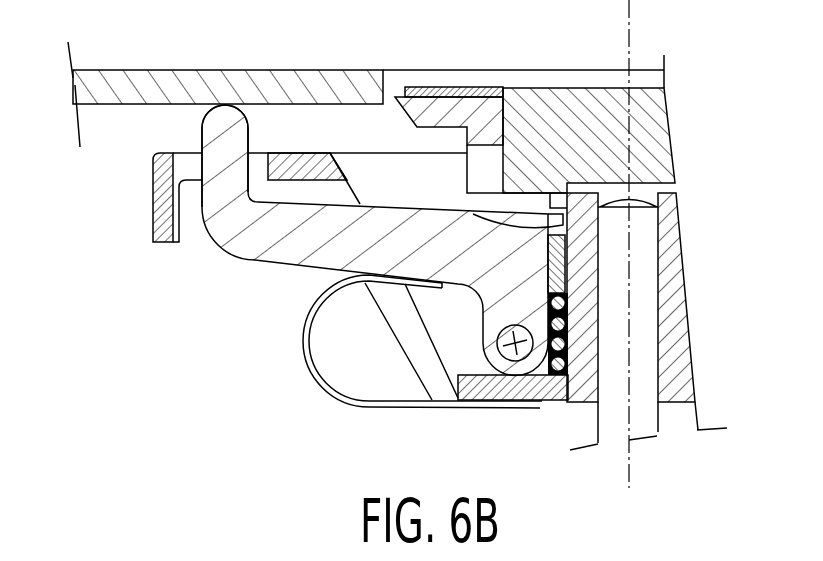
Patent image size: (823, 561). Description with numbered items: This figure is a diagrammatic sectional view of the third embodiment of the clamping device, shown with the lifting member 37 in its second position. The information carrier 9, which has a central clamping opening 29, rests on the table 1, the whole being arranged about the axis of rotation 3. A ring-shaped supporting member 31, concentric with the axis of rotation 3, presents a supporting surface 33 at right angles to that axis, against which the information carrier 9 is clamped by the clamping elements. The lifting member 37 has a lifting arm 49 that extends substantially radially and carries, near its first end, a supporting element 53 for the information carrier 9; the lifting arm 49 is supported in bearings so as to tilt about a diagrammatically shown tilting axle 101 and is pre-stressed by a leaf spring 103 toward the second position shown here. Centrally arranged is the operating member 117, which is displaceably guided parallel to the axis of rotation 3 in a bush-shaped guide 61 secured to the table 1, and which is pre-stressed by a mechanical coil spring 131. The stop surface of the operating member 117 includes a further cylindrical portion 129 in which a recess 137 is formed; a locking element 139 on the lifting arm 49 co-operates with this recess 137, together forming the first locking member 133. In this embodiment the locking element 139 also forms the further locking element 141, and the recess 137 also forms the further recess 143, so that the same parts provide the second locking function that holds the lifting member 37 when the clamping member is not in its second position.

The table 1 is at (473, 395).
The axis of rotation 3 is at (629, 475).
The information carrier 9 is at (165, 72).
The central clamping opening 29 is at (385, 72).
The supporting member 31 is at (303, 153).
The supporting surface 33 is at (287, 150).
The lifting member 37 is at (155, 365).
The lifting arm 49 is at (277, 262).
The supporting element 53 is at (220, 118).
The bush-shaped guide 61 is at (680, 351).
The tilting axle 101 is at (503, 345).
The leaf spring 103 is at (313, 385).
The operating member 117 is at (658, 128).
The further cylindrical portion 129 is at (587, 258).
The mechanical coil spring 131 is at (597, 303).
The first locking member 133 is at (527, 197).
The recess 137 is at (577, 115).
The further recess 143 is at (553, 198).
The locking element 139 is at (464, 202).
The further locking element 141 is at (493, 237).